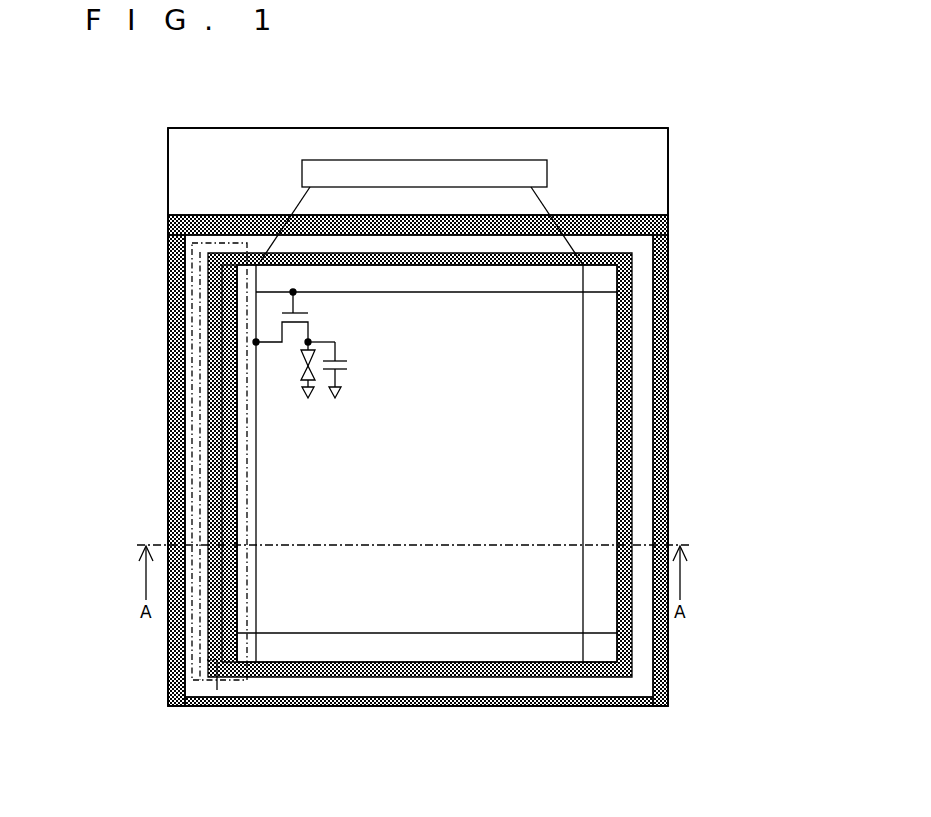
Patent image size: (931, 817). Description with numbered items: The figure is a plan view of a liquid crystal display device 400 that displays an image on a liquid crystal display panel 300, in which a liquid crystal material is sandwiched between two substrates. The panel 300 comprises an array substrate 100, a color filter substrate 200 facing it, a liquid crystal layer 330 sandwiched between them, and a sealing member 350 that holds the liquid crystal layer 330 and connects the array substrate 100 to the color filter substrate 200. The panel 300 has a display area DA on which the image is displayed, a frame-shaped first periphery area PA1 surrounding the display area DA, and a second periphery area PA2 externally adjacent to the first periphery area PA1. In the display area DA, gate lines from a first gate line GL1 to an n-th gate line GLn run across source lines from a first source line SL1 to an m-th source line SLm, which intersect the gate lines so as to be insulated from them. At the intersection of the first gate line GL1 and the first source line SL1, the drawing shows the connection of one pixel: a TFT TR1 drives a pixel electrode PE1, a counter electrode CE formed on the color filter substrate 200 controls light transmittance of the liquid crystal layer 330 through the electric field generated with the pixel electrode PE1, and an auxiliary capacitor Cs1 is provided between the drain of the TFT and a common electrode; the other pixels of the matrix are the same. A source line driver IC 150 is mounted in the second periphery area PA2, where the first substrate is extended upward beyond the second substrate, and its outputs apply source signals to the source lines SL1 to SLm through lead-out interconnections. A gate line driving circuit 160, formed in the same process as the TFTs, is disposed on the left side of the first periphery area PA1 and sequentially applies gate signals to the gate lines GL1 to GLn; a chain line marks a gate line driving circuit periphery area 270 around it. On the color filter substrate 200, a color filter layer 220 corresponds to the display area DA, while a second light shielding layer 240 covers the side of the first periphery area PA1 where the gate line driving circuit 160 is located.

The liquid crystal display device 400 is at (130, 80).
The array substrate 100 is at (451, 417).
The color filter substrate 200 is at (456, 448).
The liquid crystal display panel 300 is at (747, 150).
The source line driver IC 150 is at (421, 163).
The gate line driving circuit 160 is at (162, 461).
The color filter layer 220 is at (187, 463).
The second light shielding layer 240 is at (131, 470).
The gate line driving circuit periphery area 270 is at (149, 694).
The liquid crystal layer 330 is at (299, 368).
The sealing member 350 is at (438, 507).
The first periphery area PA1 is at (466, 470).
The second periphery area PA2 is at (418, 137).
The display area DA is at (492, 463).
The first gate line GL1 is at (436, 305).
The n-th gate line GLn is at (427, 629).
The first source line SL1 is at (276, 463).
The m-th source line SLm is at (560, 463).
The TFT TR1 is at (318, 317).
The pixel electrode PE1 is at (352, 334).
The auxiliary capacitor Cs1 is at (371, 364).
The counter electrode CE is at (338, 380).